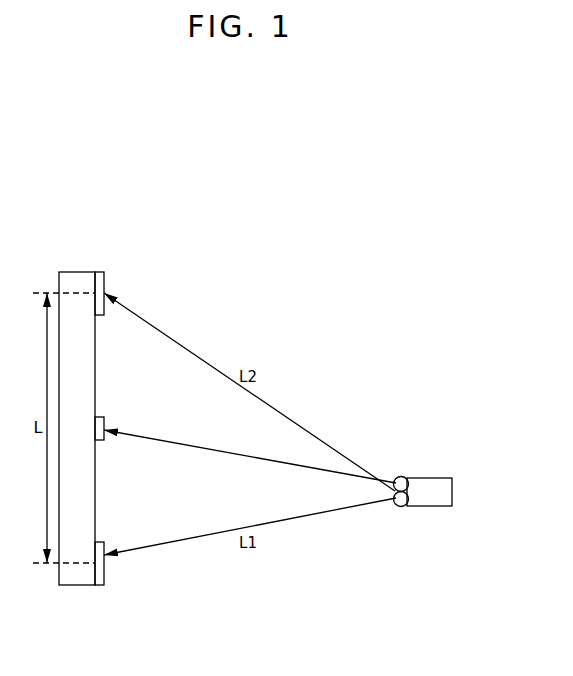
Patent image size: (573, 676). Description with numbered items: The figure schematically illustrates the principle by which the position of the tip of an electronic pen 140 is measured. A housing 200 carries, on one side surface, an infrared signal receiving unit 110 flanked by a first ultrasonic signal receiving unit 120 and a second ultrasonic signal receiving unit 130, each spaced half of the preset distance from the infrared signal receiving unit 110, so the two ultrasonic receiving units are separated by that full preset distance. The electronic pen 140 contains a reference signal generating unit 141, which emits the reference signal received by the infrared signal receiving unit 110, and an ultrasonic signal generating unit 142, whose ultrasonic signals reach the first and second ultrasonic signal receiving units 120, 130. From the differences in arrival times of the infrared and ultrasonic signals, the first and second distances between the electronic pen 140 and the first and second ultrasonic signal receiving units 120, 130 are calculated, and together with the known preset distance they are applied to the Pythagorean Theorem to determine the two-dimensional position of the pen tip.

The housing 200 is at (71, 271).
The second ultrasonic signal receiving unit 130 is at (98, 271).
The infrared signal receiving unit 110 is at (99, 416).
The first ultrasonic signal receiving unit 120 is at (99, 587).
The electronic pen 140 is at (452, 492).
The reference signal generating unit 141 is at (399, 508).
The ultrasonic signal generating unit 142 is at (398, 476).